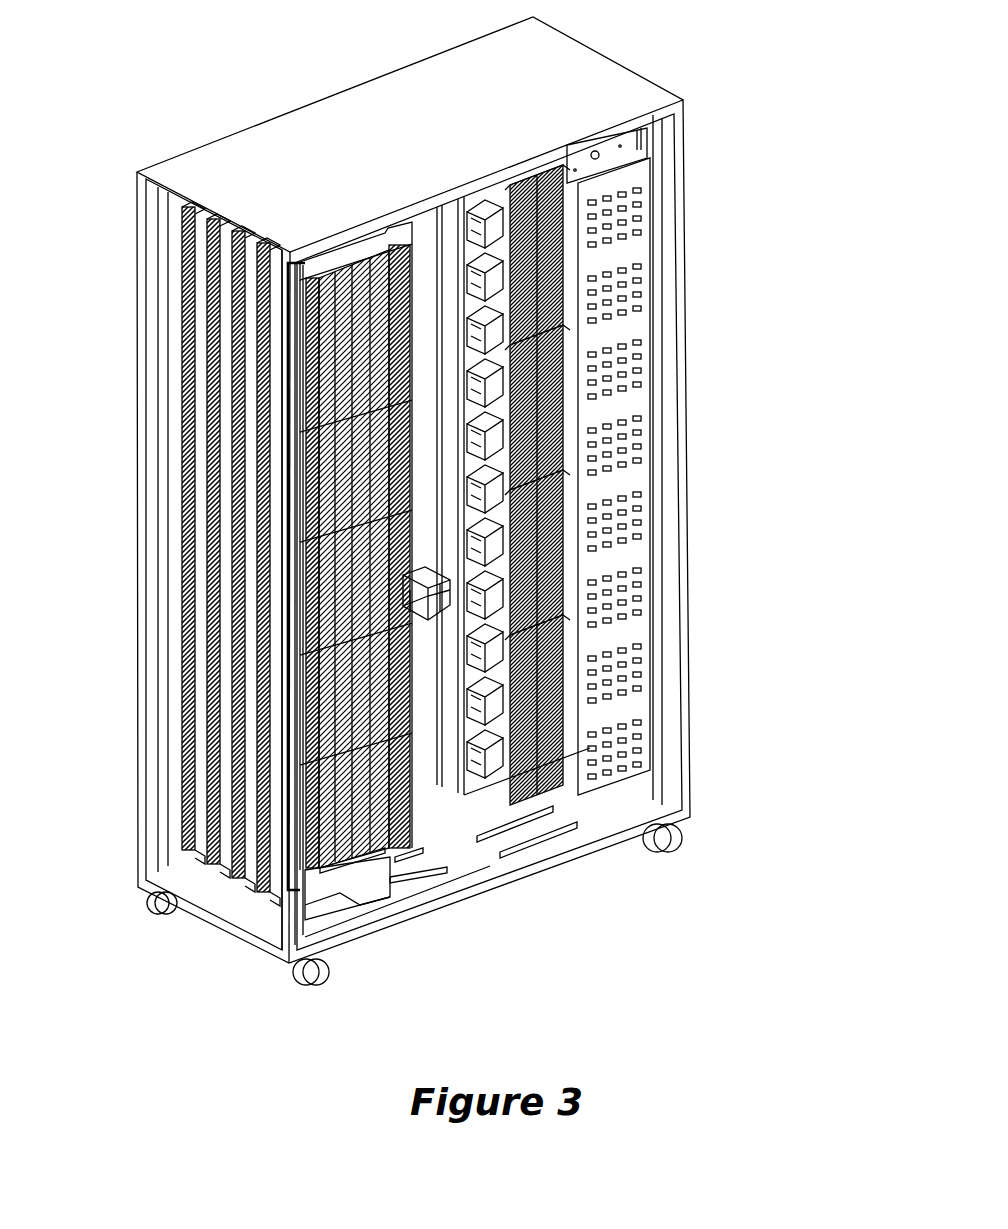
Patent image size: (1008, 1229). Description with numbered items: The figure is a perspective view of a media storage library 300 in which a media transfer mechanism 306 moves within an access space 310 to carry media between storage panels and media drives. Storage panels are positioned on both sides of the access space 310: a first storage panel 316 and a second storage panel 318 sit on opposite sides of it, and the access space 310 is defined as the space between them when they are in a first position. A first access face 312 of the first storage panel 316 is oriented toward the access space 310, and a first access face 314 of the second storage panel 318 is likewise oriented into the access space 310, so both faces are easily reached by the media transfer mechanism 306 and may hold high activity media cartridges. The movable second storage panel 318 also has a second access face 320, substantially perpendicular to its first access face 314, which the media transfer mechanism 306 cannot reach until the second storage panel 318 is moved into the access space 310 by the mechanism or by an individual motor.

The media storage library 300 is at (806, 61).
The media transfer mechanism 306 is at (420, 582).
The access space 310 is at (433, 887).
The first access face of the first storage panel 312 is at (558, 677).
The first access face of the second storage panel 314 is at (407, 845).
The first storage panel 316 is at (572, 341).
The second storage panel 318 is at (283, 468).
The second access face 320 is at (300, 623).